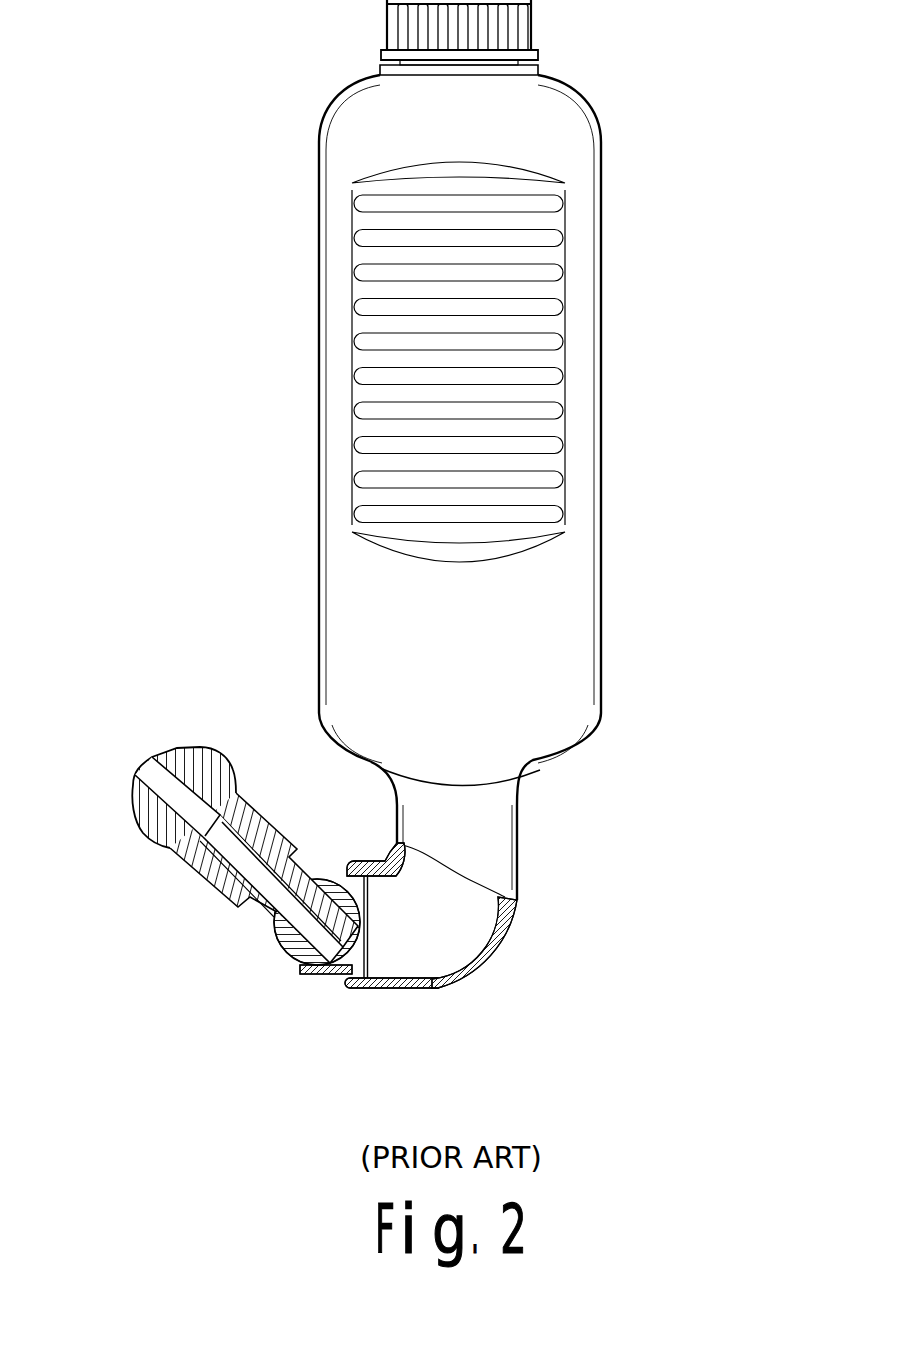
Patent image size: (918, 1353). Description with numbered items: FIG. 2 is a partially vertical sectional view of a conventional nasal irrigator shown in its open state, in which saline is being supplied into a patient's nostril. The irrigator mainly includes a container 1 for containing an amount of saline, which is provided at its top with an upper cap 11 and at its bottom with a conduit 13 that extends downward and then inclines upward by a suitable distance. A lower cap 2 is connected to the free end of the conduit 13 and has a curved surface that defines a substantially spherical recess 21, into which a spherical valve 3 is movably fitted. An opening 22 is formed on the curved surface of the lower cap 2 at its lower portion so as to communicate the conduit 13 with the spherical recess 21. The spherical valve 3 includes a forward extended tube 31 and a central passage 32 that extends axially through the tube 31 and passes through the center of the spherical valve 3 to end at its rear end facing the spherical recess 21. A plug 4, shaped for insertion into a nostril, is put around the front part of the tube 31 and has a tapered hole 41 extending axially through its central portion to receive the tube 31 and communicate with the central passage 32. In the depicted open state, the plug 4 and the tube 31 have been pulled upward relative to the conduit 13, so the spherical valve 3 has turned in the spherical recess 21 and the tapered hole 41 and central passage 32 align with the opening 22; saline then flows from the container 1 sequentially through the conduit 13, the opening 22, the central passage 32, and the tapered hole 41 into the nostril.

The container 1 is at (578, 634).
The upper cap 11 is at (522, 10).
The conduit 13 is at (497, 938).
The lower cap 2 is at (347, 980).
The spherical recess 21 is at (368, 927).
The opening 22 is at (383, 973).
The spherical valve 3 is at (275, 938).
The tube 31 is at (243, 877).
The central passage 32 is at (257, 863).
The plug 4 is at (147, 817).
The tapered hole 41 is at (168, 780).